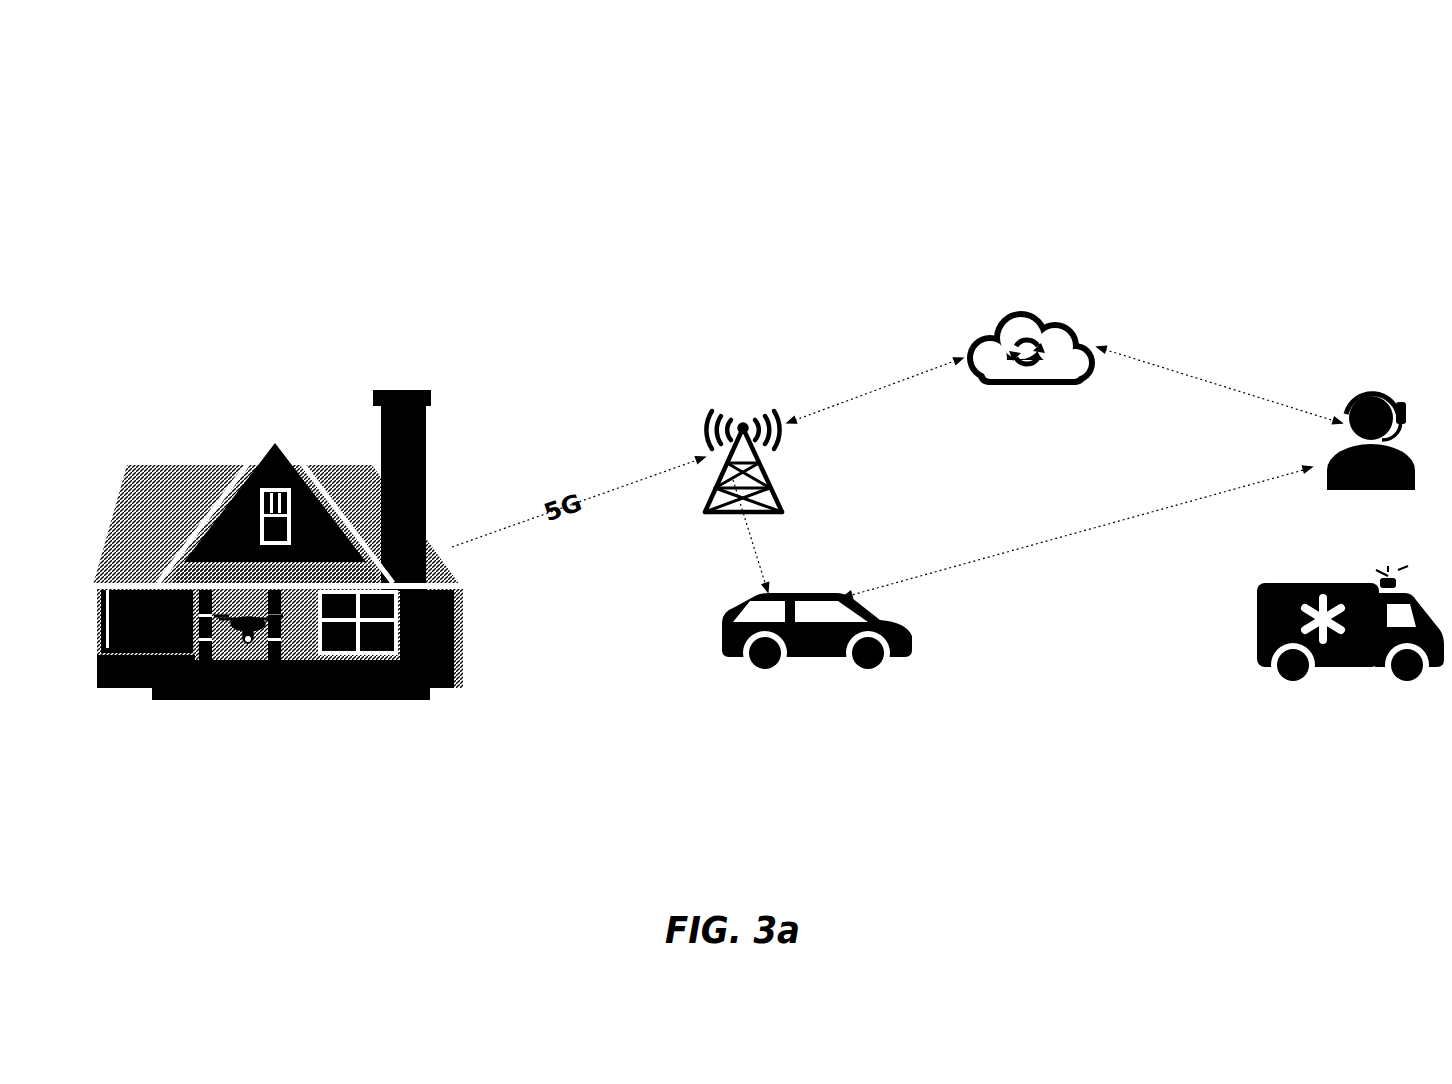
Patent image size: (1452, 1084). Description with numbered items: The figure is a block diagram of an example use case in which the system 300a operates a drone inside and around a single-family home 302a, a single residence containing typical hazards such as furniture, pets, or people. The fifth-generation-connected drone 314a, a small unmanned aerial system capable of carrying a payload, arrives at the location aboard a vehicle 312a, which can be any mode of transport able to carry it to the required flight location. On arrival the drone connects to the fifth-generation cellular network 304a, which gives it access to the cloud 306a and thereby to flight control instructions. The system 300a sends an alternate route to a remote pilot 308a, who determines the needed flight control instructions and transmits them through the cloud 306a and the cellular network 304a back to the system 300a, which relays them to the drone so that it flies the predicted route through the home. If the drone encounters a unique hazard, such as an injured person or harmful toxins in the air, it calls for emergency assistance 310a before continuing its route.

The system 300a is at (1349, 118).
The single-family home 302a is at (408, 383).
The 5G network 304a is at (765, 407).
The cloud 306a is at (1010, 312).
The remote pilot 308a is at (1350, 392).
The emergency assistance 310a is at (1300, 678).
The vehicle 312a is at (775, 666).
The 5G-connected drone 314a is at (250, 632).